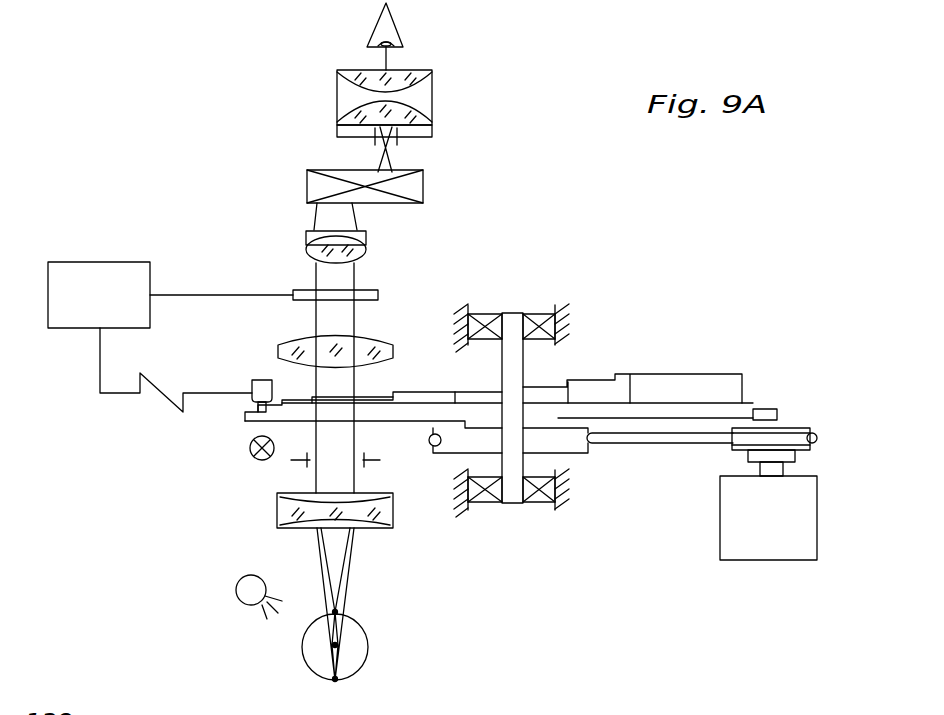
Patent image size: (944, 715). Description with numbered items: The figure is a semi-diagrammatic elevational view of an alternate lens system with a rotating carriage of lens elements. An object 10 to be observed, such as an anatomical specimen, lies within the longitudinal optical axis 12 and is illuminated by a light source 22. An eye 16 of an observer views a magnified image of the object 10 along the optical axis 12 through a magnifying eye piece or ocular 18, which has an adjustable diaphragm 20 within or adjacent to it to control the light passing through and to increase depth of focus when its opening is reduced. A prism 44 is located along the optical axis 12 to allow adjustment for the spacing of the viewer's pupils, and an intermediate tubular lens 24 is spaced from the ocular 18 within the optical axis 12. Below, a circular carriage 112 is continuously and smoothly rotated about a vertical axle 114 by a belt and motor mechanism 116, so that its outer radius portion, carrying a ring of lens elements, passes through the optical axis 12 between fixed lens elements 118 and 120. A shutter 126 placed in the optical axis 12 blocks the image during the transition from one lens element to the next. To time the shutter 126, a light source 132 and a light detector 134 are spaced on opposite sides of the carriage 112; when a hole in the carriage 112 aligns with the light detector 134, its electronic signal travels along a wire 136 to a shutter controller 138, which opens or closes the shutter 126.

The eye of an observer 16 is at (397, 20).
The longitudinal optical axis 12 is at (390, 55).
The magnifying eye piece or ocular 18 is at (428, 97).
The adjustable diaphragm 20 is at (423, 138).
The prism 44 is at (423, 188).
The intermediate tubular lens 24 is at (366, 240).
The shutter 126 is at (378, 295).
The fixed lens element 118 is at (287, 340).
The vertical axle 114 is at (517, 369).
The circular carriage 112 is at (758, 402).
The belt and motor mechanism 116 is at (802, 515).
The shutter controller 138 is at (110, 288).
The wire 136 is at (100, 370).
The light detector 134 is at (252, 392).
The light source 132 is at (248, 447).
The fixed lens element 120 is at (277, 508).
The light source 22 is at (248, 572).
The object 10 is at (360, 627).